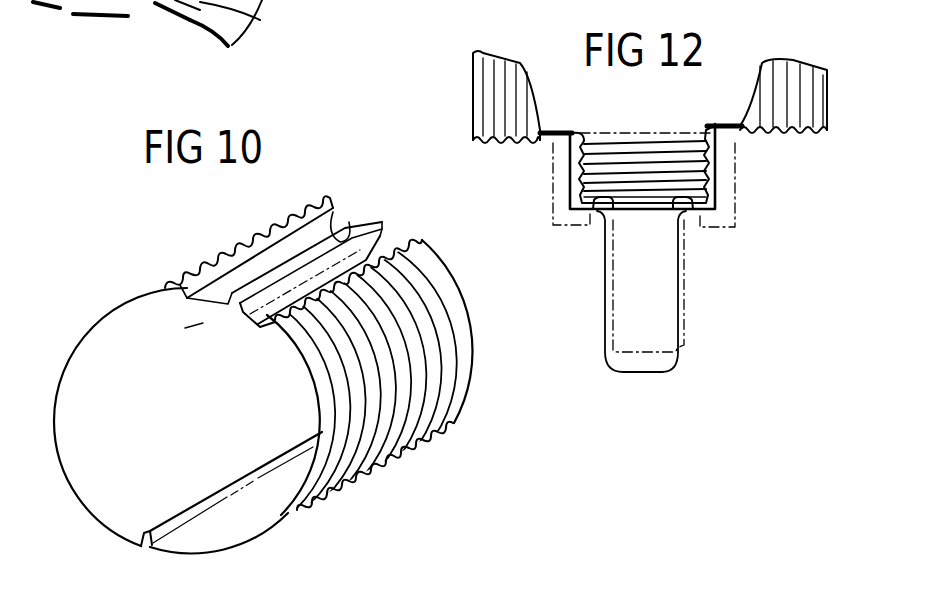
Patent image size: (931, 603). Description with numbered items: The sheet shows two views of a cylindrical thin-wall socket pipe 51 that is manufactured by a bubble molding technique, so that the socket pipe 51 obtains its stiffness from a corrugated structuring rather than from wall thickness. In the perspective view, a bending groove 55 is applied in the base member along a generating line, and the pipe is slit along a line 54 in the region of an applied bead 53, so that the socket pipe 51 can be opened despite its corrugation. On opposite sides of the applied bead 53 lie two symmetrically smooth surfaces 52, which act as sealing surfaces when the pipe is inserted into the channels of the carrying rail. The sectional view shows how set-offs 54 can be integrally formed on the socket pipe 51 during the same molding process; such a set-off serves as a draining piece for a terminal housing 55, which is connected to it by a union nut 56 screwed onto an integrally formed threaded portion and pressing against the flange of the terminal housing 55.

In FIG. 10, the socket pipe 51 is at (99, 310).
In FIG. 12, the socket pipe 51 is at (790, 136).
In FIG. 10, the smooth surfaces 52 is at (346, 262).
In FIG. 10, the applied bead 53 is at (256, 322).
In FIG. 10, the line / set-offs 54 is at (228, 300).
In FIG. 12, the line / set-offs 54 is at (716, 195).
In FIG. 10, the bending groove / terminal housing 55 is at (260, 477).
In FIG. 12, the bending groove / terminal housing 55 is at (684, 250).
In FIG. 10, the union nut 56 is at (358, 422).
In FIG. 12, the union nut 56 is at (730, 172).